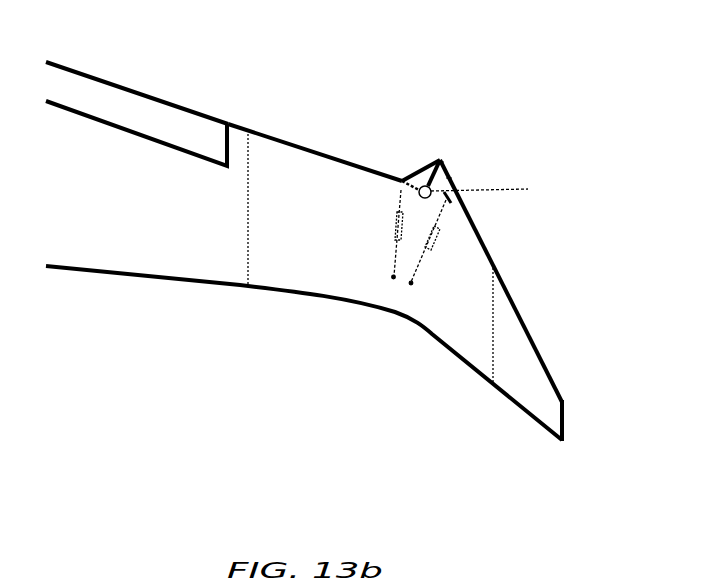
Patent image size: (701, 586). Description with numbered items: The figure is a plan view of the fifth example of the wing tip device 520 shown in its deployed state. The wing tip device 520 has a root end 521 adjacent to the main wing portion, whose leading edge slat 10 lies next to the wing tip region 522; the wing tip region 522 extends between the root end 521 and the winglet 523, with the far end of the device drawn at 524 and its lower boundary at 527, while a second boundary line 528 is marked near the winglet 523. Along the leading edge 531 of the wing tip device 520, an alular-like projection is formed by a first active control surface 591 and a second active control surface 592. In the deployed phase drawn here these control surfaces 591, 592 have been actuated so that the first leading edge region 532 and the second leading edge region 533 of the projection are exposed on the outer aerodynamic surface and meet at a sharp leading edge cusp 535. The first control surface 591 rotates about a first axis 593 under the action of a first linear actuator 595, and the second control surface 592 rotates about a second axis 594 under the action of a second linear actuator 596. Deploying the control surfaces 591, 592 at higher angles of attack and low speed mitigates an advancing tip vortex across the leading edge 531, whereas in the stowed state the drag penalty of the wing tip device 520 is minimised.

The leading edge slat 10 is at (107, 100).
The wing tip device 520 is at (550, 245).
The root end 521 is at (247, 243).
The wing tip region 522 is at (312, 265).
The winglet 523 is at (518, 323).
The end face 524 is at (567, 413).
The lower curved edge 527 is at (383, 312).
The second boundary line 528 is at (493, 338).
The leading edge 531 is at (307, 148).
The first leading edge region 532 is at (410, 168).
The second leading edge region 533 is at (448, 180).
The sharp leading edge cusp 535 is at (441, 159).
The first active control surface 591 is at (424, 178).
The second active control surface 592 is at (452, 172).
The first axis 593 is at (411, 185).
The second axis 594 is at (501, 187).
The first linear actuator 595 is at (395, 230).
The second linear actuator 596 is at (425, 245).